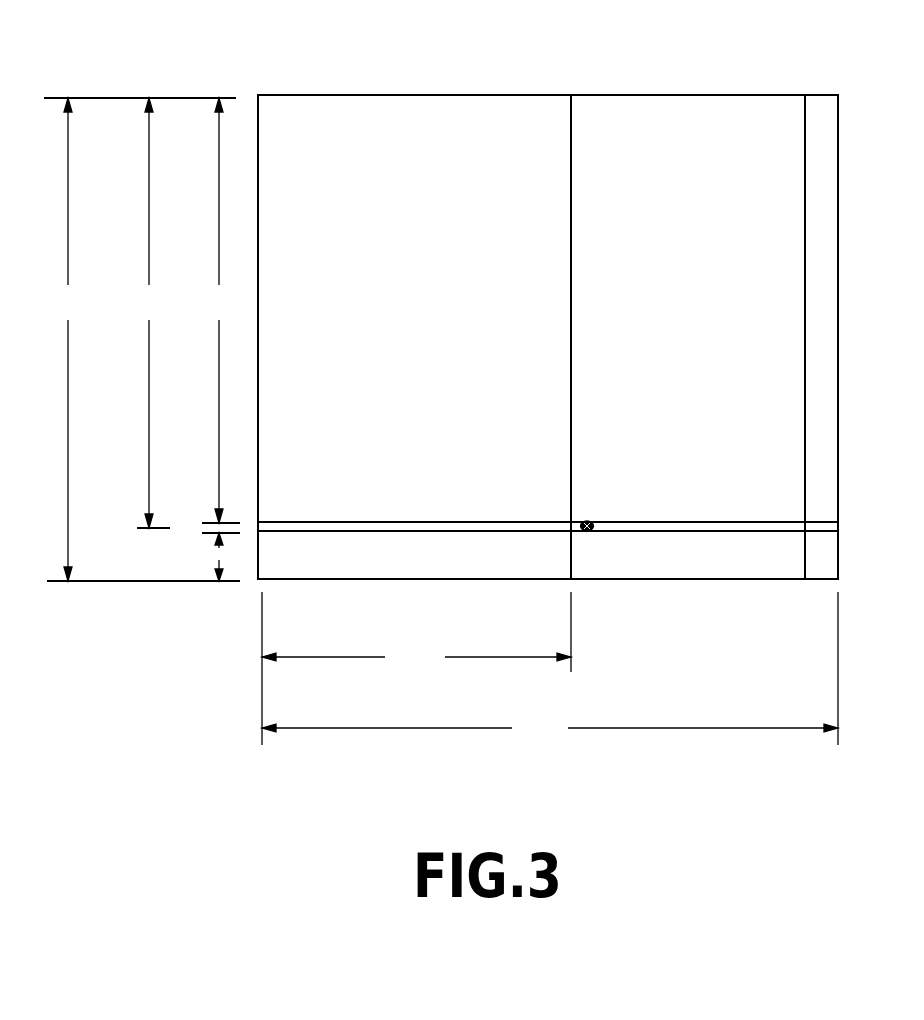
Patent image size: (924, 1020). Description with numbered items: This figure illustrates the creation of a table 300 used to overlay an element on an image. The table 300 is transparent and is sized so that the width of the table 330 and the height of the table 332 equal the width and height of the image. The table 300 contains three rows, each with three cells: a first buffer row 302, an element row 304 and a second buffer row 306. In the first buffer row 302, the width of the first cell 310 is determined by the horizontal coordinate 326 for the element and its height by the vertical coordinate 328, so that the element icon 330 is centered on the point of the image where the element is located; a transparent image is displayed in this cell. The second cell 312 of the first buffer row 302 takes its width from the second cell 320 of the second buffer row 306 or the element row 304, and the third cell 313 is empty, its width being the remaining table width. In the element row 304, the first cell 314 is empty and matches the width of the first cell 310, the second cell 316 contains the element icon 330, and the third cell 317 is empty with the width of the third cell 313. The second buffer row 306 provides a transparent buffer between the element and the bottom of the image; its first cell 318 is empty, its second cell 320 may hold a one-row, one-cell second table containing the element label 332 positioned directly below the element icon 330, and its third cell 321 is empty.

The table 300 is at (334, 95).
The first buffer row 302 is at (222, 315).
The element row 304 is at (203, 530).
The second buffer row 306 is at (214, 560).
The first cell of the first buffer row 310 is at (549, 134).
The second cell of the first buffer row 312 is at (790, 134).
The third cell of the first buffer row 313 is at (825, 99).
The first cell of the element row 314 is at (311, 528).
The second cell of the element row 316 is at (710, 526).
The third cell of the element row 317 is at (826, 523).
The first cell of the second buffer row 318 is at (549, 572).
The second cell of the second buffer row 320 is at (790, 572).
The third cell of the element label row 321 is at (826, 563).
The horizontal coordinate for the element 326 is at (416, 668).
The vertical coordinate for the element 328 is at (153, 313).
The element icon 330 is at (589, 521).
The element label 332 is at (612, 552).